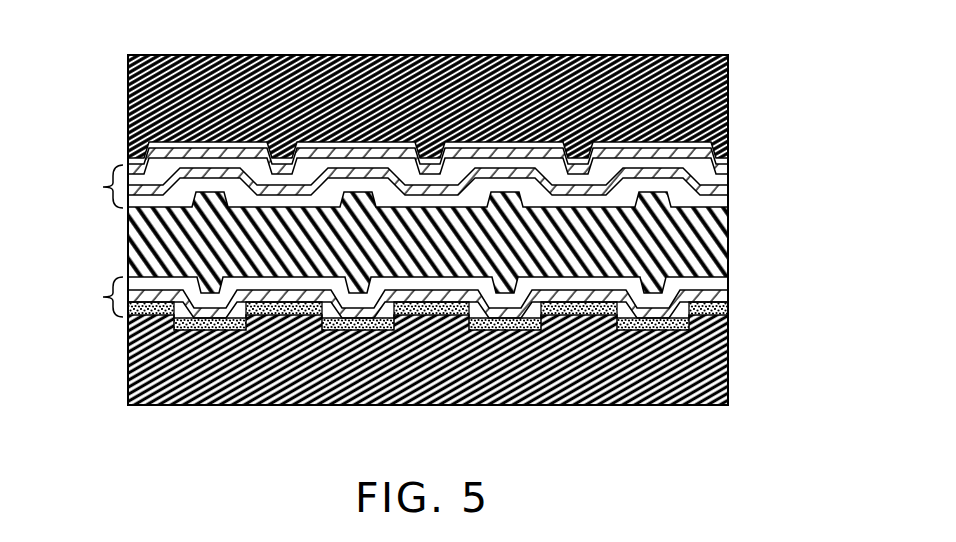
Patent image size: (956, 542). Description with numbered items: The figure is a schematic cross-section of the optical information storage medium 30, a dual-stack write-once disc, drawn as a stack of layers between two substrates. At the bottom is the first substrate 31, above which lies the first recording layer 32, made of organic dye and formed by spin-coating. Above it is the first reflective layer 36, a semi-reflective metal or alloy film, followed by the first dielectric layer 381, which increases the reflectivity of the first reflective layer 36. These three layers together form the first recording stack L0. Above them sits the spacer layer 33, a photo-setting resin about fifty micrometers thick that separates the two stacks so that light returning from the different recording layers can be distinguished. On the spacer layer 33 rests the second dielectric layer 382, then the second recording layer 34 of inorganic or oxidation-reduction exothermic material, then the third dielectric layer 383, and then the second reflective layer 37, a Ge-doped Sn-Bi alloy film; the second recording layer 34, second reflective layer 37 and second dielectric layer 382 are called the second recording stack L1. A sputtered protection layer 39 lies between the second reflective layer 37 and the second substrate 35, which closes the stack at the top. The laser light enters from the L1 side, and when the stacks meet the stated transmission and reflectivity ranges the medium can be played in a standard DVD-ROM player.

The optical information storage medium 30 is at (95, 37).
The first substrate 31 is at (728, 345).
The first recording layer 32 is at (727, 308).
The spacer layer 33 is at (728, 243).
The second recording layer 34 is at (728, 192).
The second substrate 35 is at (708, 70).
The first reflective layer 36 is at (727, 298).
The second reflective layer 37 is at (703, 173).
The protection layer 39 is at (728, 160).
The first dielectric layer 381 is at (722, 282).
The second dielectric layer 382 is at (728, 203).
The third dielectric layer 383 is at (722, 182).
The second recording stack L1 is at (89, 186).
The first recording stack L0 is at (89, 297).